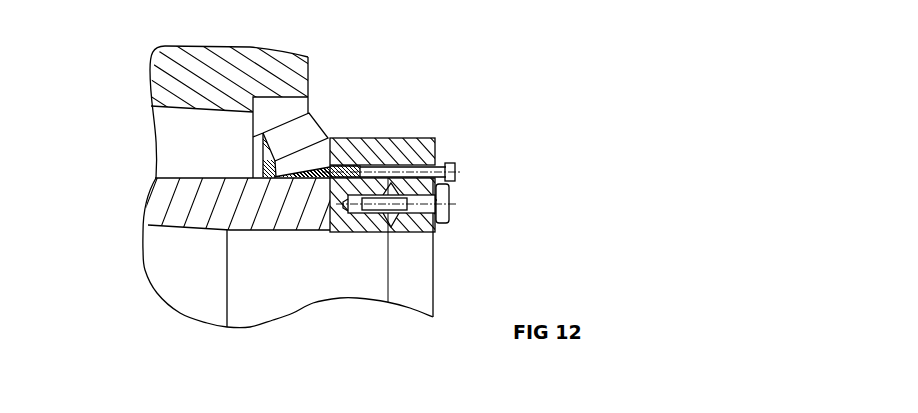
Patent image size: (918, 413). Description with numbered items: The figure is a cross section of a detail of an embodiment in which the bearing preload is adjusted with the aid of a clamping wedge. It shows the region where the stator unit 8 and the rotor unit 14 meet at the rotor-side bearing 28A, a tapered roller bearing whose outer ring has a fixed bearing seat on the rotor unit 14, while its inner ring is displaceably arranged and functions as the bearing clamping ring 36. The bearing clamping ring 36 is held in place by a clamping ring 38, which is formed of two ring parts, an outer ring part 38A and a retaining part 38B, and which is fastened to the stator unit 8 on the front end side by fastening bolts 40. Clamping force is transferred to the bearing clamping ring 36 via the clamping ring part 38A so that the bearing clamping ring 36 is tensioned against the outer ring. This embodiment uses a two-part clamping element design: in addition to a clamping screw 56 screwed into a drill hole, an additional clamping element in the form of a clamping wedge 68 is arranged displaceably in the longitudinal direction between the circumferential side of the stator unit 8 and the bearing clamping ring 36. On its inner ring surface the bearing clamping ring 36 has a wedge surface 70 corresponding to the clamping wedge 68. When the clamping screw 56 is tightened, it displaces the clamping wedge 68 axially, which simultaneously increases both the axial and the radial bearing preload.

The stator unit 8 is at (152, 209).
The rotor unit 14 is at (148, 68).
The rotor-side bearing 28A is at (314, 130).
The bearing clamping ring 36 is at (385, 113).
The clamping ring 38 is at (412, 182).
The outer ring part 38A is at (418, 143).
The retaining part 38B is at (430, 223).
The fastening bolts 40 is at (440, 212).
The clamping screw 56 is at (440, 168).
The clamping wedge 68 is at (328, 178).
The wedge surface 70 is at (357, 141).